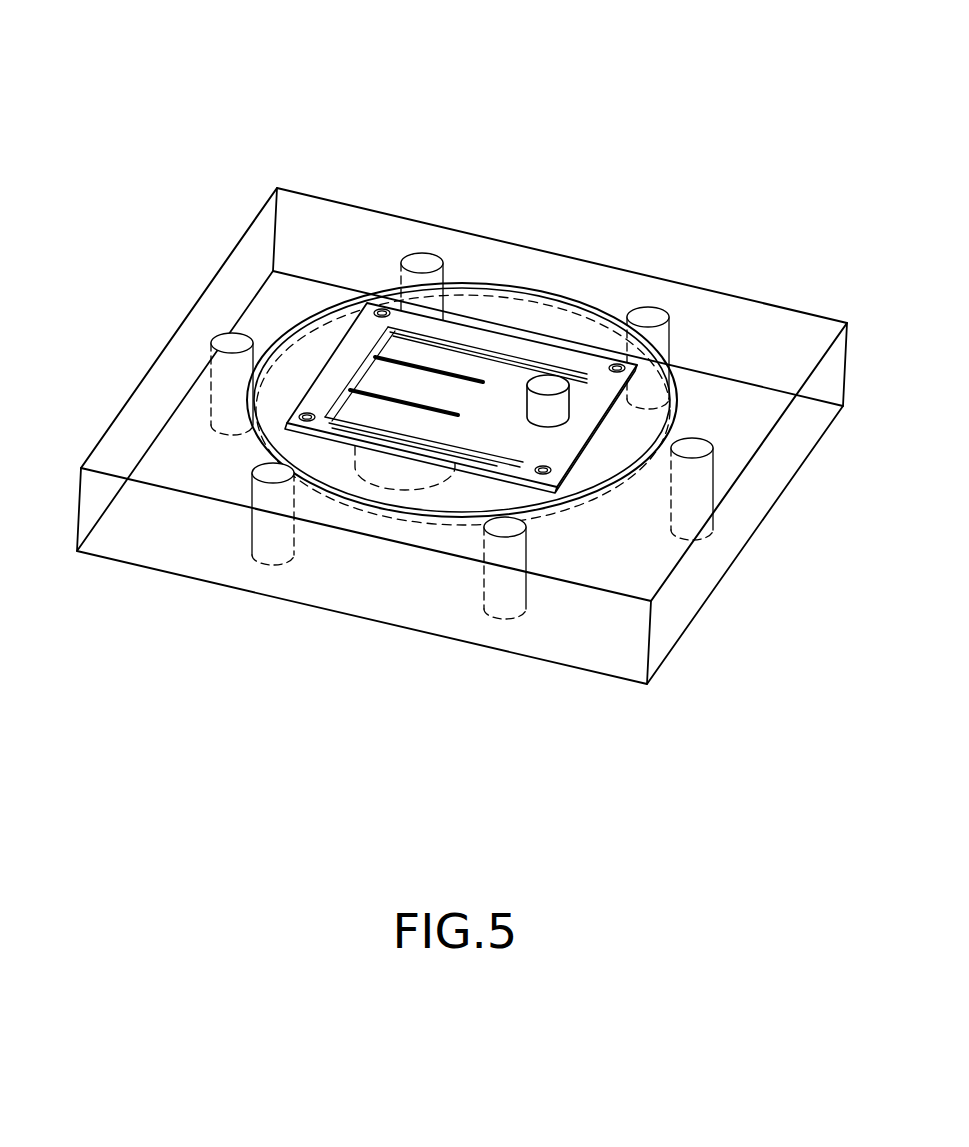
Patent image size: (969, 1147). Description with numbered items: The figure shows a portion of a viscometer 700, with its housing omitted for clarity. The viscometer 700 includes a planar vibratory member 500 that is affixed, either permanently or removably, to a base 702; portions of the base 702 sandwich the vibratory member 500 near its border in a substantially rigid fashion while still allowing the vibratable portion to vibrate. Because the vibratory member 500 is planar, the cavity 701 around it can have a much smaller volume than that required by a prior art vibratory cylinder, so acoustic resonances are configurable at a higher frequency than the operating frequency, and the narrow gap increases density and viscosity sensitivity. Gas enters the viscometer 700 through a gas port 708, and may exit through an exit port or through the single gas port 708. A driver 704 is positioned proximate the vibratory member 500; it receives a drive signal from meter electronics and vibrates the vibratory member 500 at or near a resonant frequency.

The viscometer 700 is at (182, 97).
The base 702 is at (290, 245).
The cavity 701 is at (488, 312).
The vibratory member 500 is at (586, 372).
The gas port 708 is at (543, 381).
The driver 704 is at (401, 478).